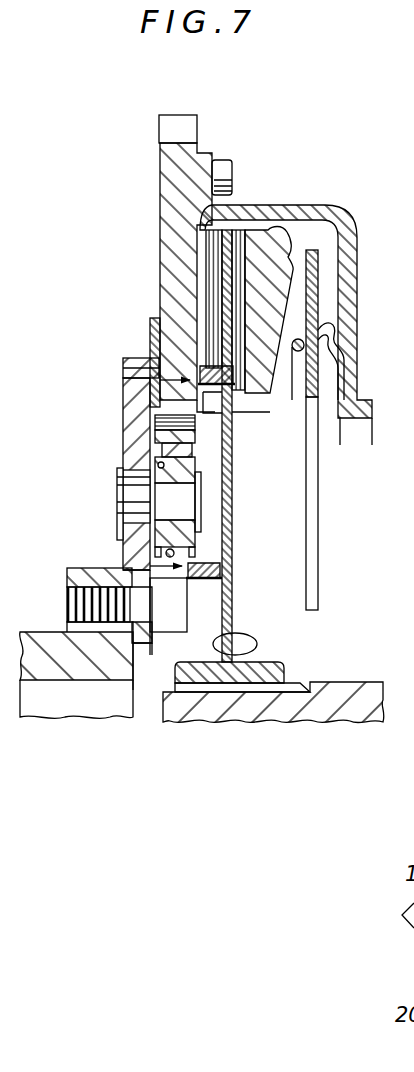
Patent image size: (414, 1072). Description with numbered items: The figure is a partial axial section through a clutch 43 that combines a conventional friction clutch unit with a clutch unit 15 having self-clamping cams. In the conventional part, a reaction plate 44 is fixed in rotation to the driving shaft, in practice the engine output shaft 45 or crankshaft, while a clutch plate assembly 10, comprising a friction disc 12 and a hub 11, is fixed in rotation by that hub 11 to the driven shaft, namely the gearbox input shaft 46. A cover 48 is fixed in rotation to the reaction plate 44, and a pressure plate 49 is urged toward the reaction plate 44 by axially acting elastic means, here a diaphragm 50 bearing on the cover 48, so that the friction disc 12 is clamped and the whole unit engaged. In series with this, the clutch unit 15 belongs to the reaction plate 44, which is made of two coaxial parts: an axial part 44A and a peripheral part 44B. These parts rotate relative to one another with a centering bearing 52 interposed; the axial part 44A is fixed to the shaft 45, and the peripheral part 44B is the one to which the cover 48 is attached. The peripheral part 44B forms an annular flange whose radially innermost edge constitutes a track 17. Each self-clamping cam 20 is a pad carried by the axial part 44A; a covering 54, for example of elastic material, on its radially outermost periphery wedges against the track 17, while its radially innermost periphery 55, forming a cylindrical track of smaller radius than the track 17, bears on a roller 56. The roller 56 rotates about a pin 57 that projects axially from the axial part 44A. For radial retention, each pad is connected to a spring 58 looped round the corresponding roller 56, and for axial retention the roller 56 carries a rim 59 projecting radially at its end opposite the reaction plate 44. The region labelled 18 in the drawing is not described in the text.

The clutch plate assembly 10 is at (238, 228).
The hub 11 is at (292, 662).
The friction disc 12 is at (205, 278).
The clutch unit 15 is at (206, 441).
The track 17 is at (228, 400).
The bearing 18 is at (175, 501).
The self-clamping cam 20 is at (155, 424).
The clutch 43 is at (212, 123).
The reaction plate 44 is at (152, 198).
The axial part 44A is at (125, 455).
The peripheral part 44B is at (167, 233).
The output shaft 45 is at (42, 628).
The input shaft 46 is at (360, 680).
The cover 48 is at (352, 212).
The pressure plate 49 is at (295, 210).
The diaphragm 50 is at (320, 492).
The centering bearing 52 is at (123, 367).
The covering 54 is at (152, 421).
The radially innermost periphery 55 is at (157, 447).
The roller 56 is at (205, 538).
The pin 57 is at (195, 506).
The spring 58 is at (127, 514).
The rim 59 is at (197, 458).